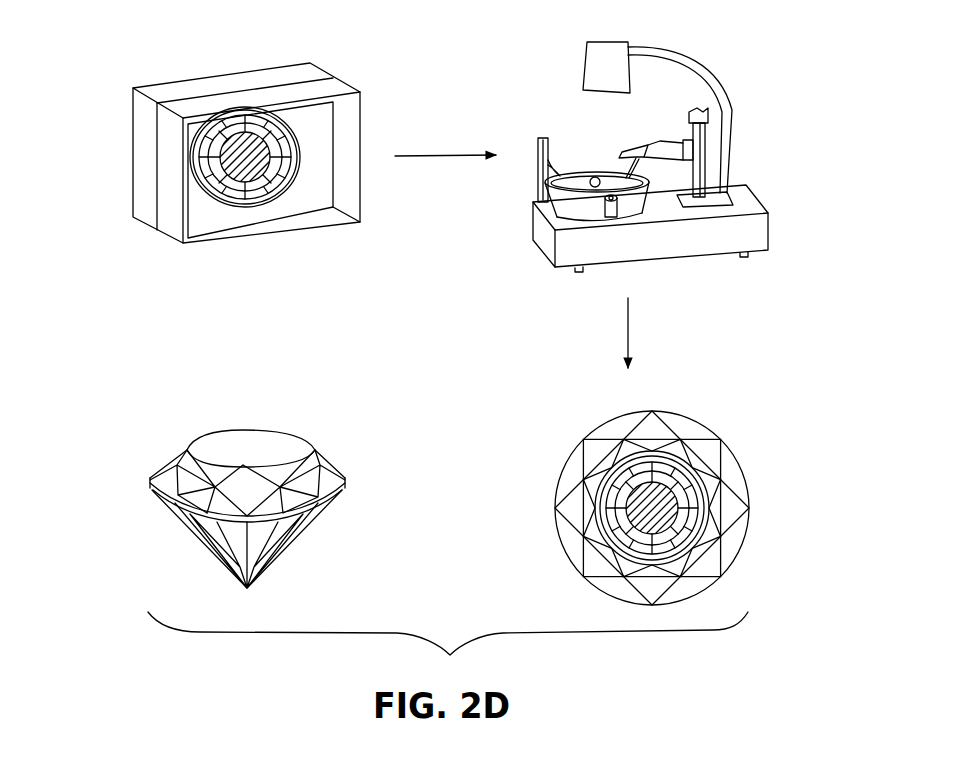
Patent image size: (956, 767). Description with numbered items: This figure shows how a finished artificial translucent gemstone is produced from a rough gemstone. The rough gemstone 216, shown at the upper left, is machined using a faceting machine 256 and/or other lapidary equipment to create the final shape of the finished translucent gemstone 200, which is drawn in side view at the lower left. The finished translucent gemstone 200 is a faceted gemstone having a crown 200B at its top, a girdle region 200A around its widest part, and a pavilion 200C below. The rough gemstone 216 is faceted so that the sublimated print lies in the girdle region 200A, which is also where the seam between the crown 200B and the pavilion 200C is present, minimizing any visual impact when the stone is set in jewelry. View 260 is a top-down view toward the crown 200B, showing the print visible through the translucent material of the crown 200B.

The rough gemstone 216 is at (181, 53).
The faceting machine 256 is at (709, 47).
The finished translucent gemstone 200 is at (439, 481).
The girdle region 200A is at (151, 503).
The crown 200B is at (242, 427).
The pavilion 200C is at (279, 568).
The view 260 is at (656, 402).